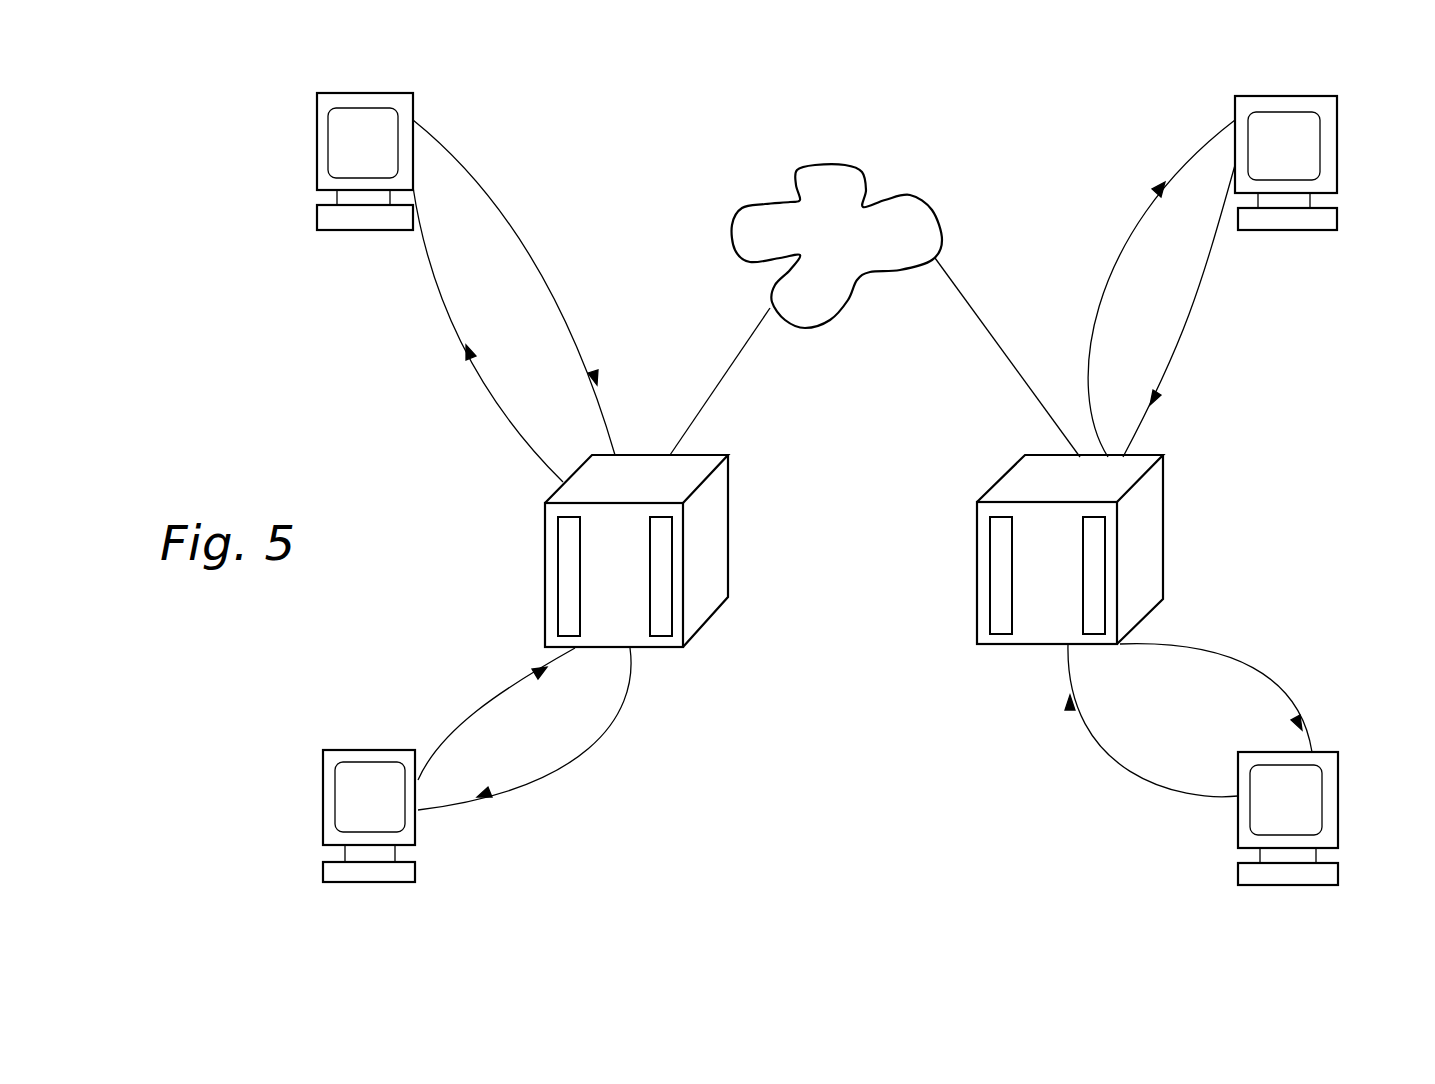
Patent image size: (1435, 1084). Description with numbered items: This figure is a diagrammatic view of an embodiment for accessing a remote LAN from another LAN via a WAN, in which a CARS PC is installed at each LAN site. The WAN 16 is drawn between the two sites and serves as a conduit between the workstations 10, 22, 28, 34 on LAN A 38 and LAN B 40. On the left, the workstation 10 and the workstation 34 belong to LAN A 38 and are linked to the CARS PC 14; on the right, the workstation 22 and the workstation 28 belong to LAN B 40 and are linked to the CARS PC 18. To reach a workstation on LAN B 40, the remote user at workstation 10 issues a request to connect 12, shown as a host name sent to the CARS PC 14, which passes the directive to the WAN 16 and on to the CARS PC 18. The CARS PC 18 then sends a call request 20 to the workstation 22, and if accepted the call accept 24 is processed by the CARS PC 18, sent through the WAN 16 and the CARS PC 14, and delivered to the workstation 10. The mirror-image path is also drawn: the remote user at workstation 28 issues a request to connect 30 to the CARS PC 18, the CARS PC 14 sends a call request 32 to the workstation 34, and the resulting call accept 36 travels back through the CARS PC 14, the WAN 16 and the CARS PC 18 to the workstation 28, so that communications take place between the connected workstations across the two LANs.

The workstation 10 is at (315, 154).
The request to connect 12 is at (575, 310).
The CARS PC 14 is at (545, 600).
The WAN 16 is at (917, 198).
The CARS PC 18 is at (1165, 568).
The call request 20 is at (1105, 280).
The workstation 22 is at (1340, 168).
The call accept 24 is at (510, 438).
The workstation 28 is at (1340, 818).
The request to connect 30 is at (1162, 790).
The call request 32 is at (617, 697).
The workstation 34 is at (325, 820).
The call accept 36 is at (458, 735).
The LAN A 38 is at (574, 942).
The LAN B 40 is at (1001, 950).